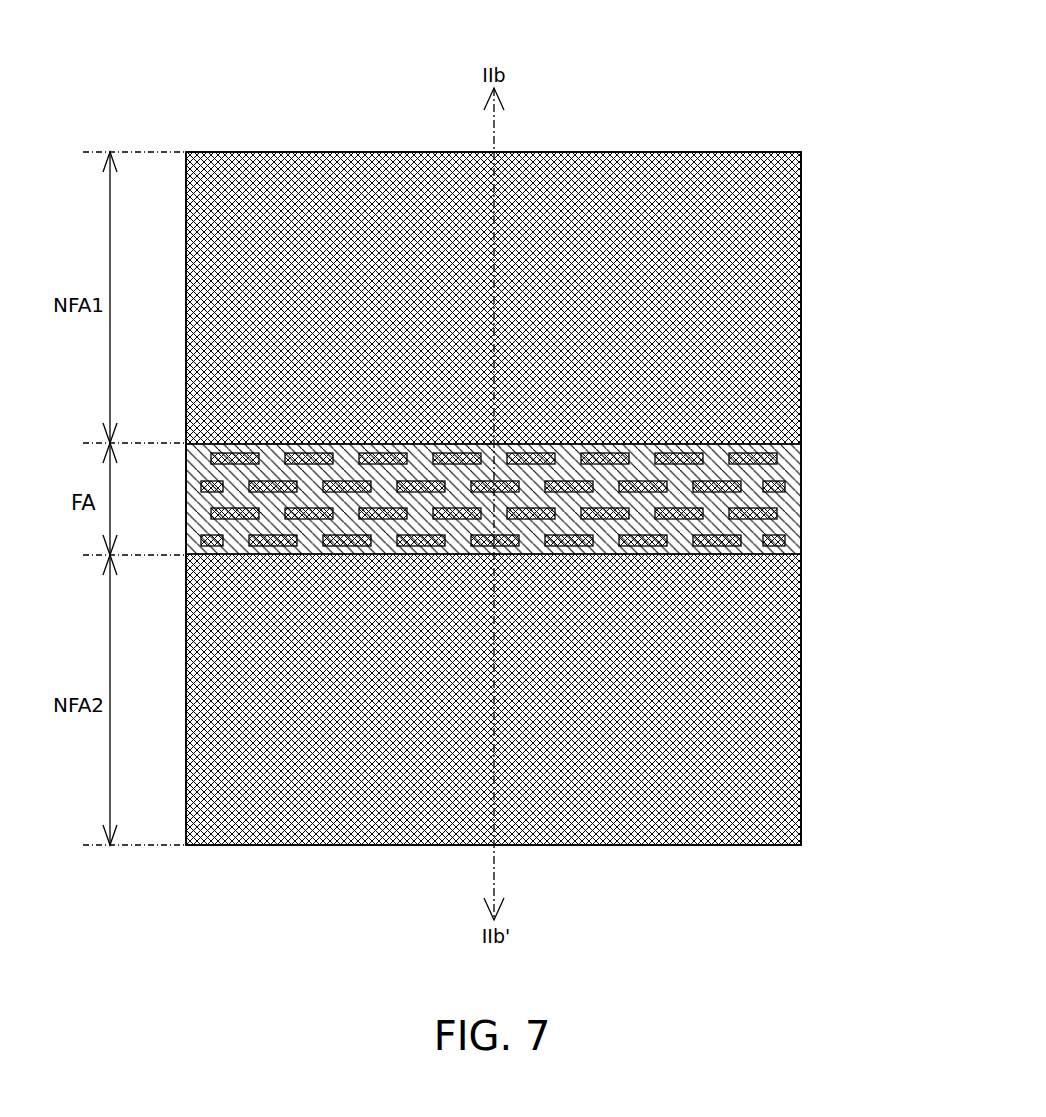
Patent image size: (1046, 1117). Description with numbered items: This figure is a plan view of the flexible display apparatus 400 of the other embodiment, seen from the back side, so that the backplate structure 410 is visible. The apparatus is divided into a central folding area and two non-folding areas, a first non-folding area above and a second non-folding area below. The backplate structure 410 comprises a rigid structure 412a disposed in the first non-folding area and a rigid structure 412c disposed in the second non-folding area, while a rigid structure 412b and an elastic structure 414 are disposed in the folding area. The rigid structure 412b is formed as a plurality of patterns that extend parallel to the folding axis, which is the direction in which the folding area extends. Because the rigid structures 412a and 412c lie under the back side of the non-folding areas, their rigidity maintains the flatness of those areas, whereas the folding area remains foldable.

The flexible display apparatus 400 is at (760, 23).
The backplate structure 410 is at (741, 144).
The rigid structure 412a is at (775, 294).
The rigid structure 412b is at (768, 447).
The rigid structure 412c is at (775, 716).
The elastic structure 414 is at (777, 500).